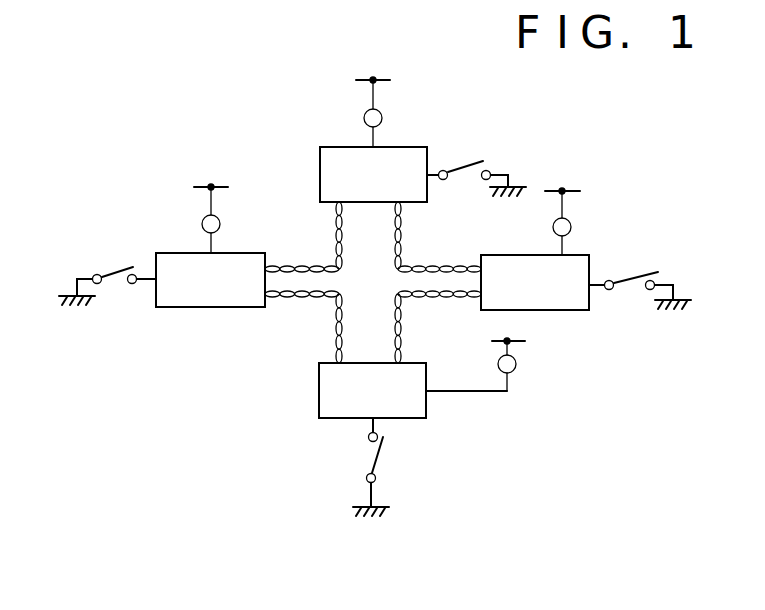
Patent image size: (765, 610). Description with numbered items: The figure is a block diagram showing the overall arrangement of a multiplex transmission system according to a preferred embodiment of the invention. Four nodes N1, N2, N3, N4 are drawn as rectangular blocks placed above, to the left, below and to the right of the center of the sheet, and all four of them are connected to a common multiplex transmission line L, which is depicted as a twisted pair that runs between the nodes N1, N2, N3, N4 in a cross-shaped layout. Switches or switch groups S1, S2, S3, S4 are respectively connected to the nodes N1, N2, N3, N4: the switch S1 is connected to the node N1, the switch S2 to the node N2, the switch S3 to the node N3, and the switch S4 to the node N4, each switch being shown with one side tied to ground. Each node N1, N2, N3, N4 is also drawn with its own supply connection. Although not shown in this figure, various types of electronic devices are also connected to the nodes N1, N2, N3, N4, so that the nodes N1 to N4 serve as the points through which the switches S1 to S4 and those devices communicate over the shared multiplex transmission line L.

The node N1 is at (345, 147).
The node N2 is at (194, 308).
The node N3 is at (333, 419).
The node N4 is at (560, 311).
The switch or switch group S1 is at (467, 165).
The switch or switch group S2 is at (112, 273).
The switch or switch group S3 is at (381, 455).
The switch or switch group S4 is at (627, 281).
The multiplex transmission line L is at (297, 344).